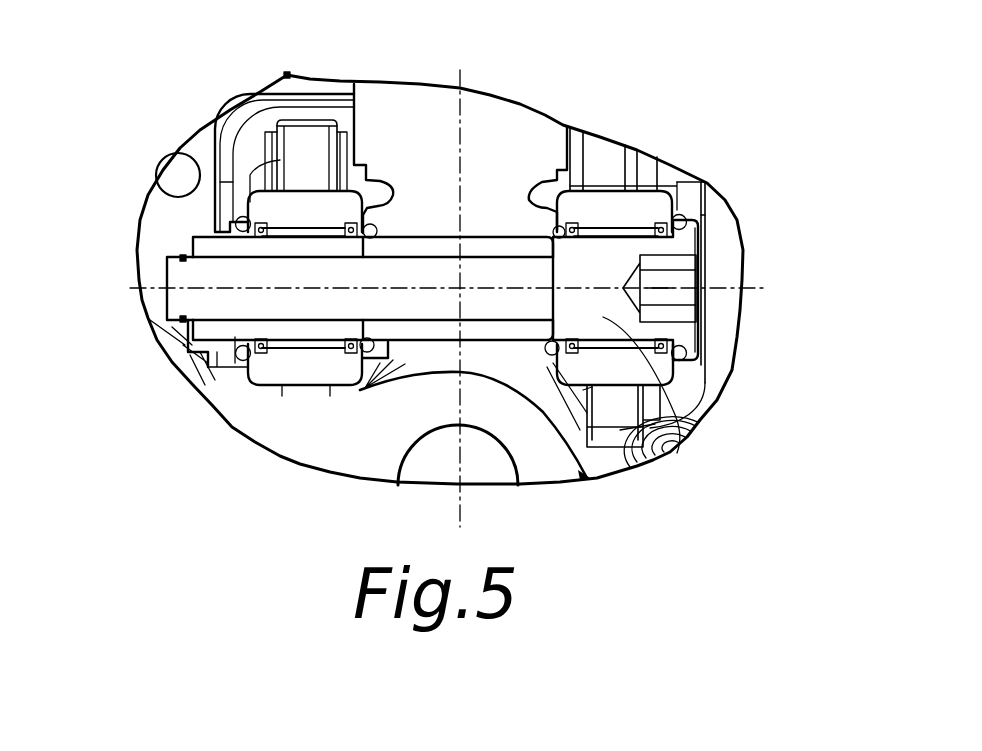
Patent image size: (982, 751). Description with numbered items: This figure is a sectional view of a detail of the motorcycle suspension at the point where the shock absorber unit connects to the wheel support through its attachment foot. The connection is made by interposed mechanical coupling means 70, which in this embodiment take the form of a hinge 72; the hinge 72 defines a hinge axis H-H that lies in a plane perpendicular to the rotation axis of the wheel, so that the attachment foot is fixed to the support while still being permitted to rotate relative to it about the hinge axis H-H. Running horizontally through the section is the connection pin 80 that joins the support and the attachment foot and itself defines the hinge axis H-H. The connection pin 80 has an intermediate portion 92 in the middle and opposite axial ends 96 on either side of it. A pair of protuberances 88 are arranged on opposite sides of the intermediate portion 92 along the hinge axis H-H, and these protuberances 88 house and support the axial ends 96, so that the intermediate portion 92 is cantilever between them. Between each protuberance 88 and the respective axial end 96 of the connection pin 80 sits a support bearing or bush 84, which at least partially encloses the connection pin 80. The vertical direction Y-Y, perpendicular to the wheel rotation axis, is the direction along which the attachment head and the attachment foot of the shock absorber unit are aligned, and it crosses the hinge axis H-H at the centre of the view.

The mechanical coupling means 70 is at (778, 166).
The hinge 72 is at (710, 213).
The connection pin 80 is at (490, 305).
The support bearing or bush 84 is at (236, 335).
The protuberances 88 is at (231, 201).
The intermediate portion 92 is at (430, 246).
The axial ends 96 is at (182, 318).
The hinge axis H is at (165, 290).
The vertical direction Y is at (462, 77).